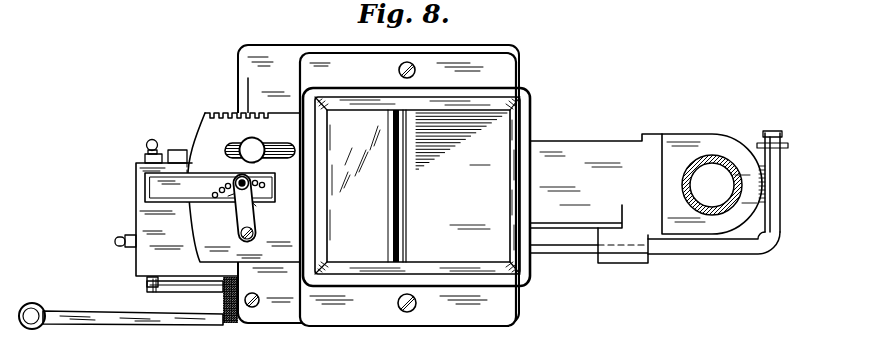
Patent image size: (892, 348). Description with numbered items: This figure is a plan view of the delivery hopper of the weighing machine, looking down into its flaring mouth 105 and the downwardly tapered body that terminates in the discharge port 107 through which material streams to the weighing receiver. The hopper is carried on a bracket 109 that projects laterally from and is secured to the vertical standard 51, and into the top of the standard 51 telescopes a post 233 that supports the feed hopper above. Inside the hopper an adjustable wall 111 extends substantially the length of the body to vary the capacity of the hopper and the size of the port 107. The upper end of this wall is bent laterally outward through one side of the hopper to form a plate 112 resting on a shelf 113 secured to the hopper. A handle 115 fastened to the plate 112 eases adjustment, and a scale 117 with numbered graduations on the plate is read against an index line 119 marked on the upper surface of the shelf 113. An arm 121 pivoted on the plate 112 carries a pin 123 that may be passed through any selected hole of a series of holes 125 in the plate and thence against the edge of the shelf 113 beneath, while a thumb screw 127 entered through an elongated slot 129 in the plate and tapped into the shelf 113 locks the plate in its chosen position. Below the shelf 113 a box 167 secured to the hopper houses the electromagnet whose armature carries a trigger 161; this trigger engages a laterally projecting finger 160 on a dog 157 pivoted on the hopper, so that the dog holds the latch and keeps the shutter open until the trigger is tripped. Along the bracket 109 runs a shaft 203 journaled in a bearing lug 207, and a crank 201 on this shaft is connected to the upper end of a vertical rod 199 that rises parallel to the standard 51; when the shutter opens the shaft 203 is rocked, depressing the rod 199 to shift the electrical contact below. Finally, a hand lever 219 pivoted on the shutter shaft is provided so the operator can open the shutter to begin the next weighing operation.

The vertical standard 51 is at (712, 236).
The flaring mouth 105 is at (365, 90).
The discharge port 107 is at (412, 205).
The bracket 109 is at (590, 137).
The adjustable wall 111 is at (405, 181).
The plate 112 is at (200, 126).
The shelf 113 is at (243, 65).
The handle 115 is at (145, 186).
The scale 117 is at (208, 112).
The index line 119 is at (247, 98).
The arm 121 is at (238, 217).
The pin 123 is at (237, 180).
The holes 125 is at (253, 202).
The thumb screw 127 is at (255, 147).
The elongated slot 129 is at (237, 145).
The dog 157 is at (207, 289).
The finger 160 is at (152, 287).
The trigger 161 is at (147, 280).
The box 167 is at (137, 215).
The rod 199 is at (787, 144).
The crank 201 is at (766, 133).
The shaft 203 is at (578, 254).
The lug 207 is at (642, 263).
The hand lever 219 is at (160, 317).
The post 233 is at (710, 155).